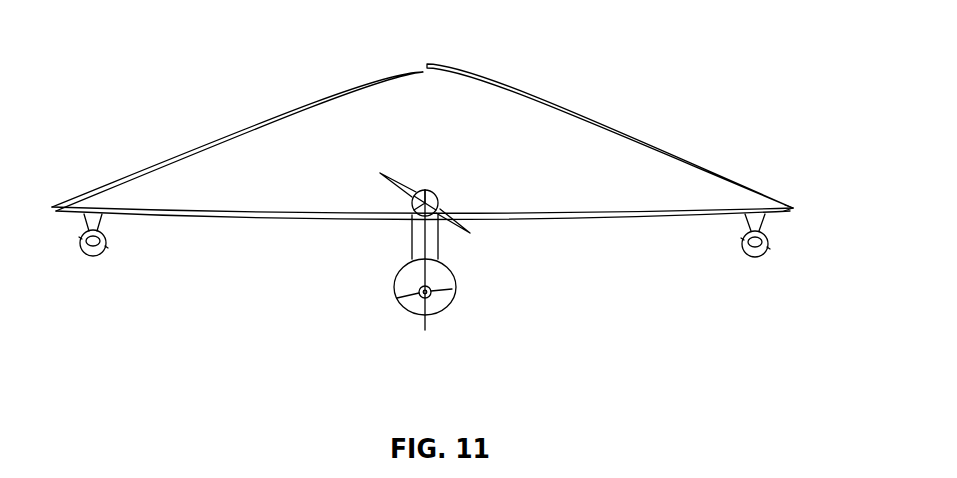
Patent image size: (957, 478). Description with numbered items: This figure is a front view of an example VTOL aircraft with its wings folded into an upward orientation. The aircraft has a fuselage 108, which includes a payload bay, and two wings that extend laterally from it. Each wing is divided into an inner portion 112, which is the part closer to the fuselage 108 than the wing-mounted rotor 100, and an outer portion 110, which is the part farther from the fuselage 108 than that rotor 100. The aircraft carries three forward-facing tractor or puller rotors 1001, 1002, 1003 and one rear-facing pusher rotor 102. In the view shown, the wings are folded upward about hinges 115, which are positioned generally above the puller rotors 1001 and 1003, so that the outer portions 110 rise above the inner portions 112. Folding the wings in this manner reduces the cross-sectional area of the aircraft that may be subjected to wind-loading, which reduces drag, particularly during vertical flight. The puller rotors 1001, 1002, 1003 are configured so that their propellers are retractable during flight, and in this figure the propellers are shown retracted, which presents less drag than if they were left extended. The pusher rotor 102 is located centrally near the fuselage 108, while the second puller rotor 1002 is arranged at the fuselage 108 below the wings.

The forward-facing rotor 100 is at (425, 307).
The first puller rotor 1001 is at (91, 257).
The second puller rotor 1002 is at (428, 297).
The third puller rotor 1003 is at (757, 258).
The rear-facing rotor 102 is at (437, 192).
The fuselage 108 is at (440, 272).
The outer portion of wing 110 is at (260, 118).
The inner portion of wing 112 is at (222, 216).
The hinge 115 is at (793, 209).